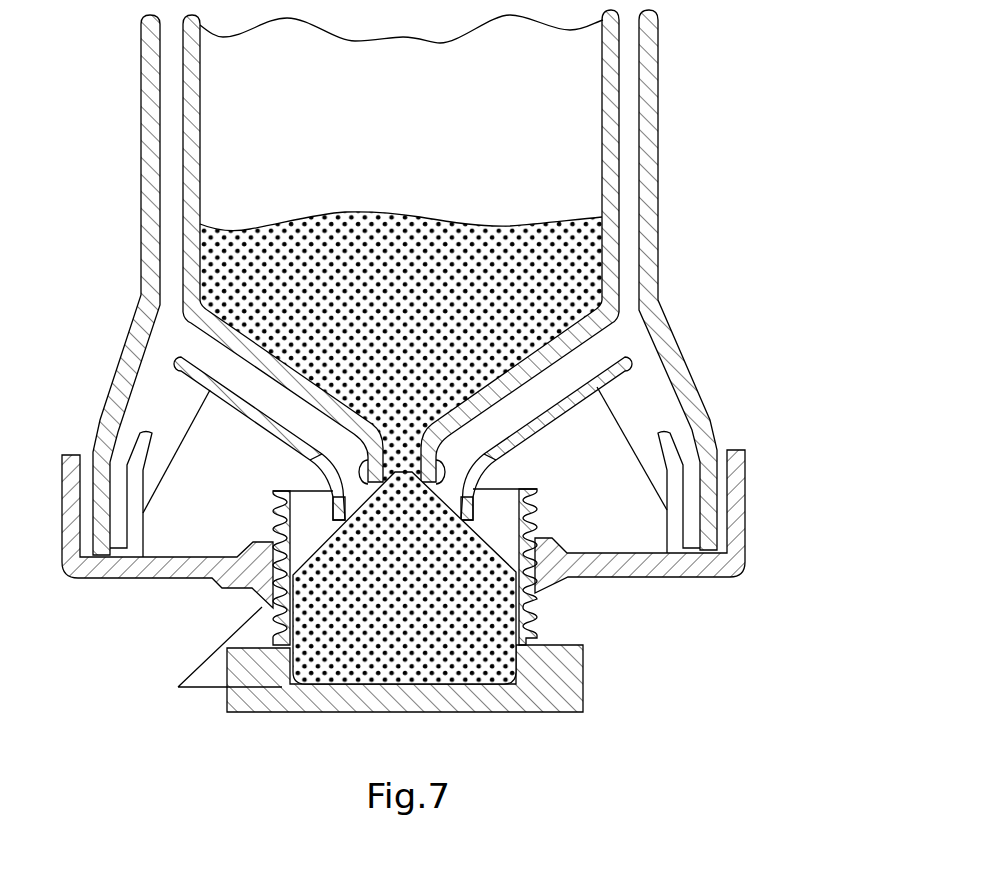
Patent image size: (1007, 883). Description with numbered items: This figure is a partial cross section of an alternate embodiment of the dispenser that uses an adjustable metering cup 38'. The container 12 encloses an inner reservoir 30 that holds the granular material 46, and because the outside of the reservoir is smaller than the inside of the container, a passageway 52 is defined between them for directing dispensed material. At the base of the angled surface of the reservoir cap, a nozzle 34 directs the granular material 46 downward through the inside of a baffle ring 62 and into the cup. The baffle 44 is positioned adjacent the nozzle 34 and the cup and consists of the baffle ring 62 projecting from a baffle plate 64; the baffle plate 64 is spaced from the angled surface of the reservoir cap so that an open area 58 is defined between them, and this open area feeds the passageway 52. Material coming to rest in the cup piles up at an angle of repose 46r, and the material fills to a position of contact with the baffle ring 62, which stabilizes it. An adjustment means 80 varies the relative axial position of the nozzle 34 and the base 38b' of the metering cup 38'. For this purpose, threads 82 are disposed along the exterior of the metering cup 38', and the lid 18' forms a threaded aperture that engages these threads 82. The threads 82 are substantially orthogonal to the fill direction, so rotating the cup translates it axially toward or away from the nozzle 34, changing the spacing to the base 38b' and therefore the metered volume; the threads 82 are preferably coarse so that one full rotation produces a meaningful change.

The container 12 is at (148, 145).
The passageway 52 is at (173, 105).
The inner reservoir 30 is at (613, 79).
The baffle 44 is at (642, 353).
The granular material 46 is at (580, 266).
The angle of repose 46r is at (208, 680).
The nozzle 34 is at (400, 430).
The open area 58 is at (228, 368).
The baffle plate 64 is at (580, 428).
The baffle ring 62 is at (337, 508).
The lid 18' is at (442, 529).
The adjustment means 80 is at (558, 628).
The adjustable metering cup 38' is at (508, 578).
The base of metering cup 38b' is at (389, 712).
The threads 82 is at (266, 590).